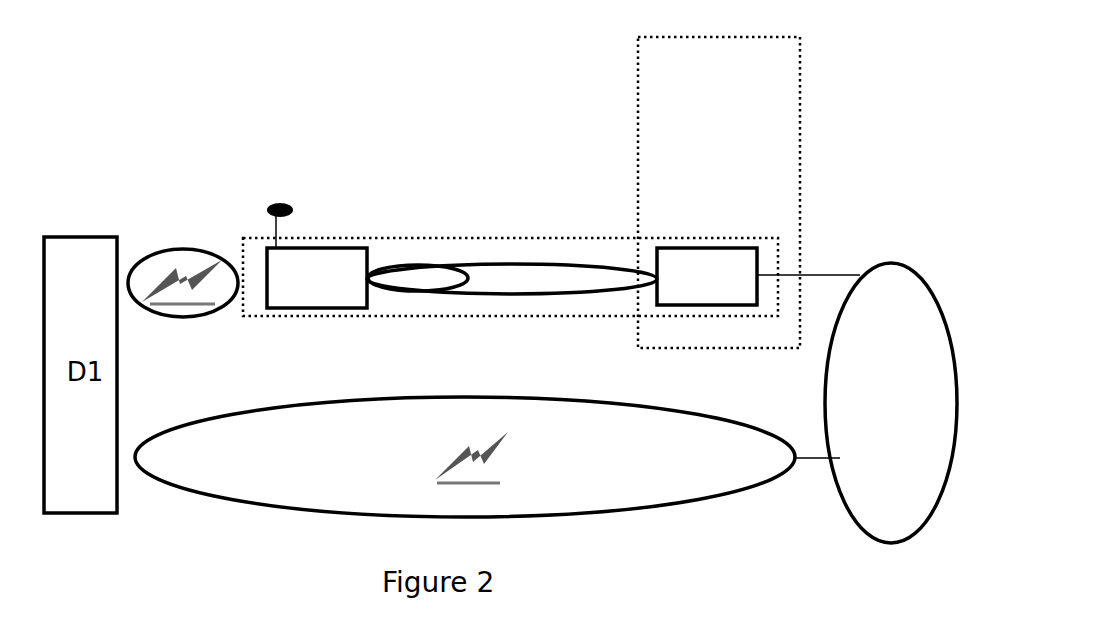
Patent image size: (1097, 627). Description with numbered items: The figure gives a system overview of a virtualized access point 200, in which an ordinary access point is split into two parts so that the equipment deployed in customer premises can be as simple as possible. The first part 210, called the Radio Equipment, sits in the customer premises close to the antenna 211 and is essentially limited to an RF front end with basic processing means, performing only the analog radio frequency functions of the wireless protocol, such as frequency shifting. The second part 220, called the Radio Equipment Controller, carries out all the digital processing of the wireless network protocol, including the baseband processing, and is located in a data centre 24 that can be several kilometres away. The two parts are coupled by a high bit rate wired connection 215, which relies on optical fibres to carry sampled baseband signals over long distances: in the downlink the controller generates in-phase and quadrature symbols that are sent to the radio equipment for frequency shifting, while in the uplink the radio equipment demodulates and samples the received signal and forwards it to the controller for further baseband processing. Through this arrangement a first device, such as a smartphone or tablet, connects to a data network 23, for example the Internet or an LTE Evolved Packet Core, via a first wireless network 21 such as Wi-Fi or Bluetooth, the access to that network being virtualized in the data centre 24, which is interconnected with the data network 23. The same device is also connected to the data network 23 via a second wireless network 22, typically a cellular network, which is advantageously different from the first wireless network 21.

The first wireless network 21 is at (176, 250).
The second wireless network 22 is at (190, 493).
The data network 23 is at (840, 498).
The data centre 24 is at (802, 105).
The virtualized access point 200 is at (432, 238).
The first part (Radio Equipment, RE) 210 is at (337, 248).
The antenna 211 is at (282, 202).
The high bit rate wired connection 215 is at (500, 265).
The second part (Radio Equipment Controller, REC) 220 is at (758, 258).